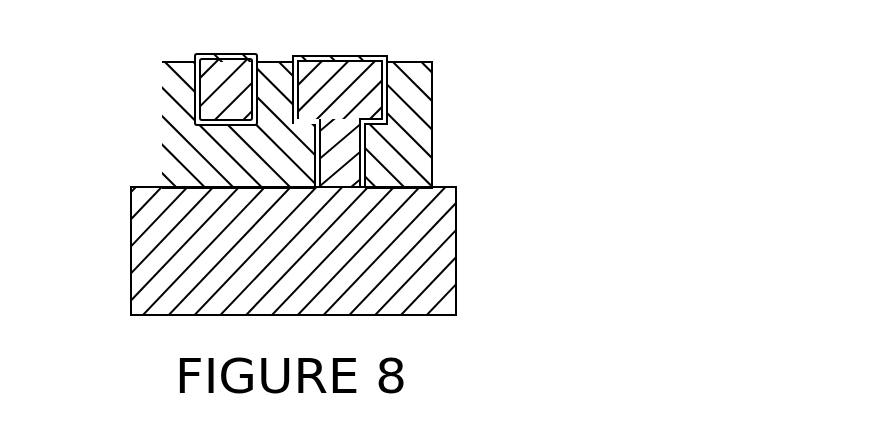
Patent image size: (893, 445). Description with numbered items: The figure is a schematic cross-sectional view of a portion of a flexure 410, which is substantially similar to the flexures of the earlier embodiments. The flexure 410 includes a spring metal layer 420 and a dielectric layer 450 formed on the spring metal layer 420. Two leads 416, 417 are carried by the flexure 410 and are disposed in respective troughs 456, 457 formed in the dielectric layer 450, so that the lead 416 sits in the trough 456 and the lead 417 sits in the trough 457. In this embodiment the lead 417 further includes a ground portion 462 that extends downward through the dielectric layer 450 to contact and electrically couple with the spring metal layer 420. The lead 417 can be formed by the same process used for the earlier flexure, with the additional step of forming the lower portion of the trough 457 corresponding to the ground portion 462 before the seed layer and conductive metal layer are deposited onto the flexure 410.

The flexure 410 is at (116, 86).
The lead 416 is at (223, 69).
The lead 417 is at (356, 68).
The spring metal layer 420 is at (462, 273).
The dielectric layer 450 is at (436, 165).
The trough 456 is at (189, 110).
The trough 457 is at (392, 88).
The ground portion 462 is at (347, 158).